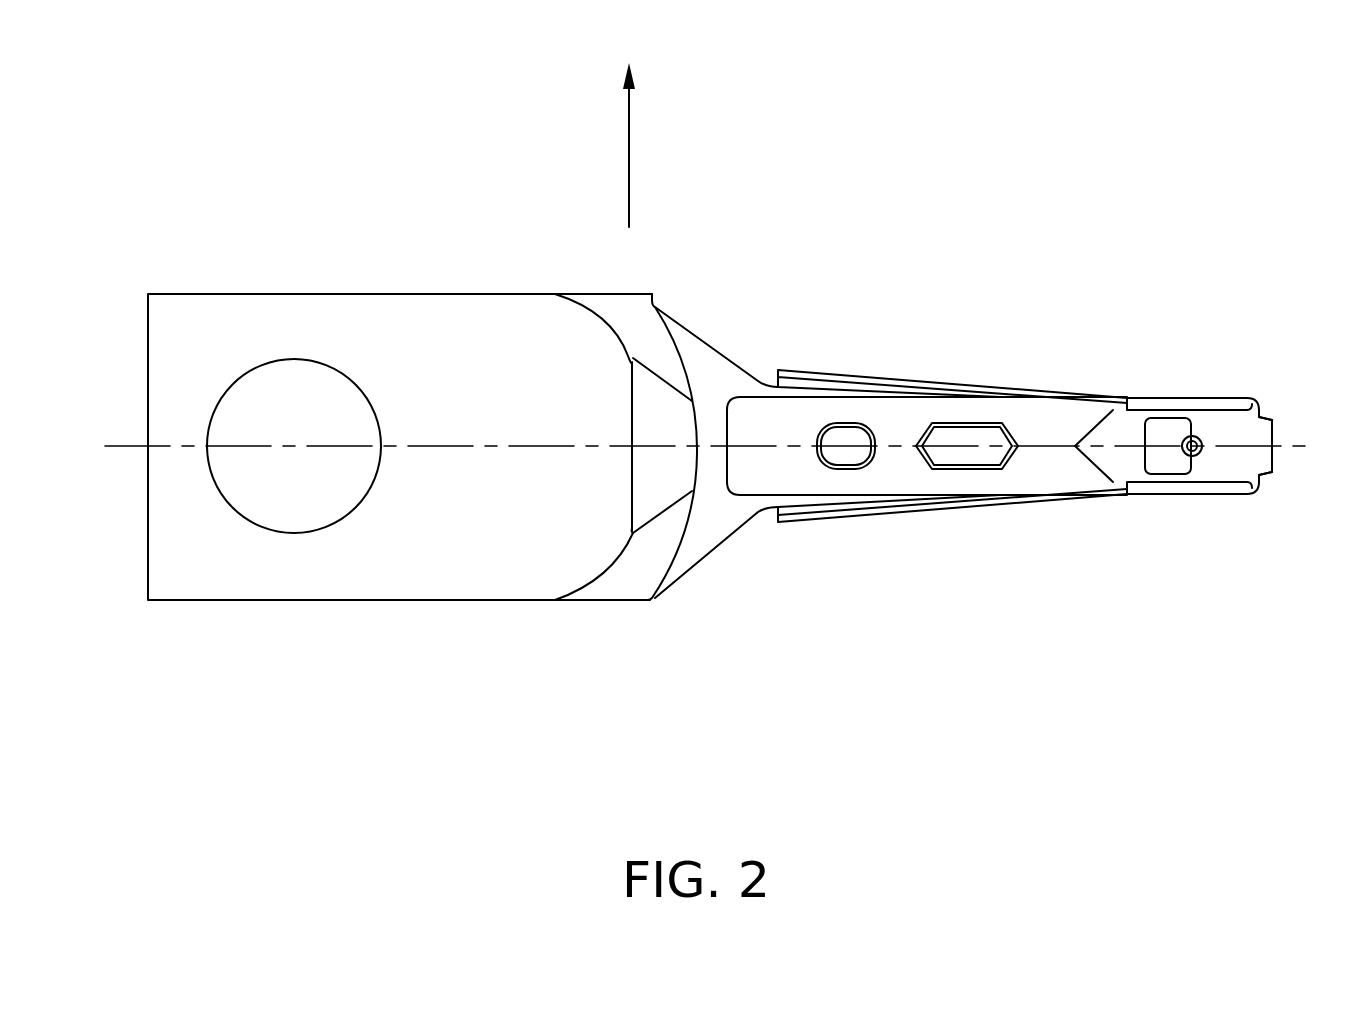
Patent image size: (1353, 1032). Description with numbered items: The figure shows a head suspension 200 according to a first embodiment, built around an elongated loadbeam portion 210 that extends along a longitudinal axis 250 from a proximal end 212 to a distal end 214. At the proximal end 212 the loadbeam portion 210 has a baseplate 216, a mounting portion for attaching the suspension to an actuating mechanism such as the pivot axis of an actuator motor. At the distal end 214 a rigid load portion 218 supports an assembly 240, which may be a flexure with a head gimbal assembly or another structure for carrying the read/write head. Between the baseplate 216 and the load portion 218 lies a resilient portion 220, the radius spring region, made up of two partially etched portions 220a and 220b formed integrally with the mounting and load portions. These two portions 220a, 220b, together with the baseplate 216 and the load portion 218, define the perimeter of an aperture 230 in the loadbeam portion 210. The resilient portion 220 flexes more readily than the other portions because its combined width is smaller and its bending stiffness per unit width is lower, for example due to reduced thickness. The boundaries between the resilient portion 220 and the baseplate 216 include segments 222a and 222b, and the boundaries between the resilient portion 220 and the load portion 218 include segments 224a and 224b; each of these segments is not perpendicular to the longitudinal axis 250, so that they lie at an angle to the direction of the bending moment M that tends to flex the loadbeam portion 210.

The head suspension 200 is at (728, 419).
The loadbeam portion 210 is at (677, 315).
The proximal end 212 is at (218, 293).
The distal end 214 is at (1197, 428).
The baseplate 216 is at (396, 439).
The rigid load portion 218 is at (722, 520).
The resilient portion 220 is at (637, 487).
The partially etched portion 220a is at (645, 570).
The partially etched portion 220b is at (653, 348).
The segment 222a is at (596, 598).
The segment 222b is at (601, 318).
The segment 224a is at (680, 538).
The segment 224b is at (690, 377).
The aperture 230 is at (647, 395).
The assembly 240 is at (1239, 438).
The longitudinal axis 250 is at (1278, 442).